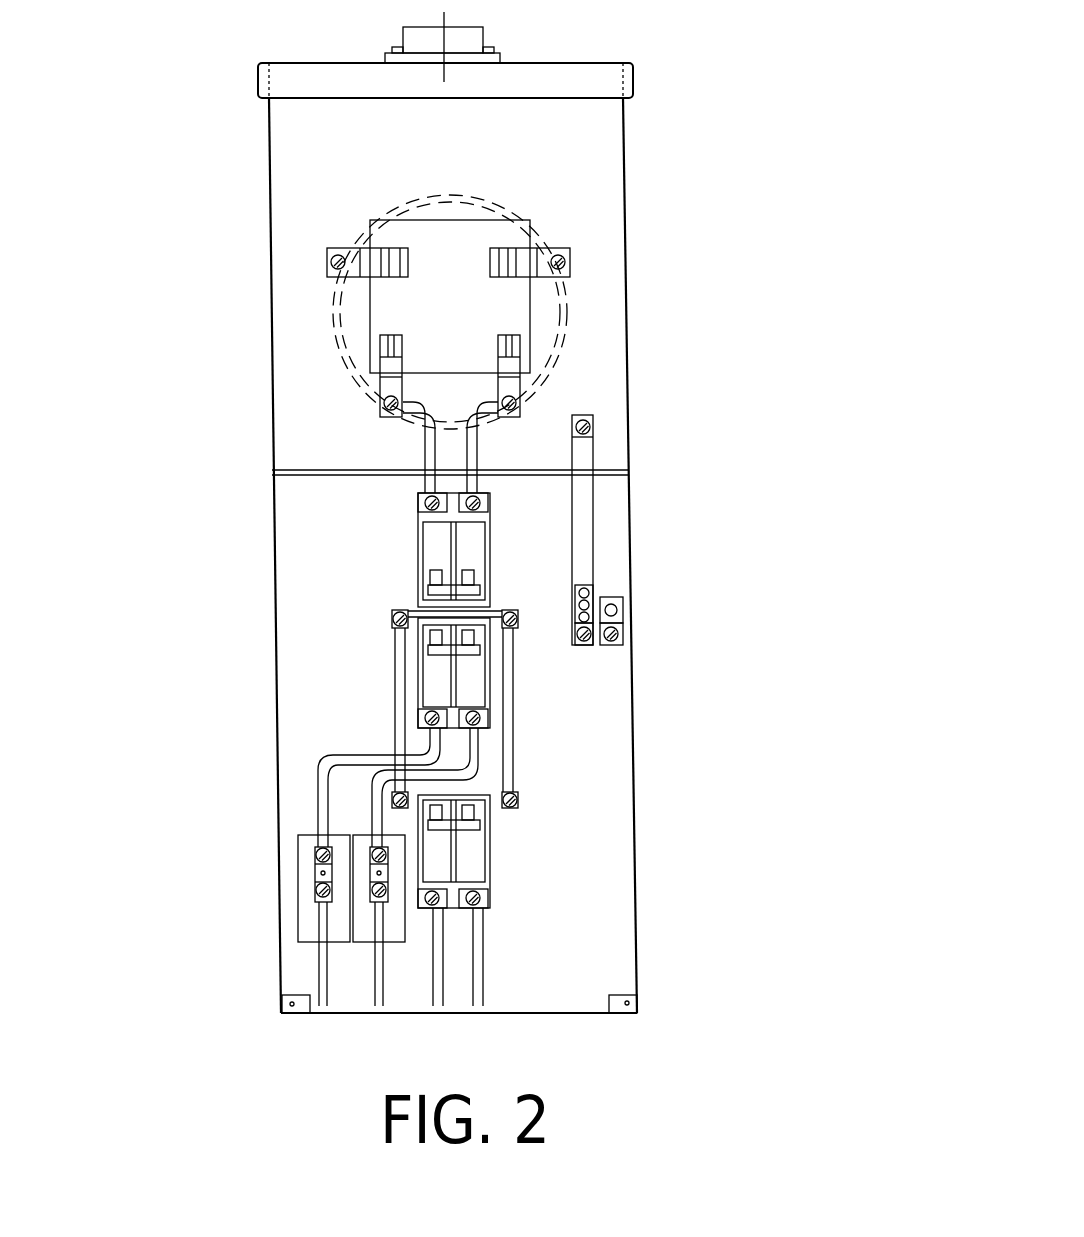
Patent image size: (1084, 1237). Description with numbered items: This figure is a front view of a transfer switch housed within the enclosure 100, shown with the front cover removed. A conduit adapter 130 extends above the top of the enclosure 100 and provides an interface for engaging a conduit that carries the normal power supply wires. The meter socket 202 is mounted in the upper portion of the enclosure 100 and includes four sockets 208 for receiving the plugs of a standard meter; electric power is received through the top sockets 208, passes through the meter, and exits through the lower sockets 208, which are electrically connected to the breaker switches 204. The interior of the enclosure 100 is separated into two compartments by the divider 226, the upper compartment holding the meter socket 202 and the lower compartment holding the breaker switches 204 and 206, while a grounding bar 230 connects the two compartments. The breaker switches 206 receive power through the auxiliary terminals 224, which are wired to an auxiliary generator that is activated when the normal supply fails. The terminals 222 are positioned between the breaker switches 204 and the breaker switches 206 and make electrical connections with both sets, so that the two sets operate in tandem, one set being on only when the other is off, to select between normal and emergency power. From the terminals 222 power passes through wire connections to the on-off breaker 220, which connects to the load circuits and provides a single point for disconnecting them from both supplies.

The enclosure 100 is at (627, 153).
The conduit adapter 130 is at (485, 33).
The meter socket 202 is at (530, 222).
The transfer breakers 204 is at (490, 538).
The transfer breakers 206 is at (487, 673).
The sockets 208 is at (385, 258).
The on-off breaker 220 is at (493, 848).
The terminals 222 is at (394, 612).
The auxiliary terminals 224 is at (370, 845).
The divider 226 is at (607, 468).
The grounding bar 230 is at (588, 492).